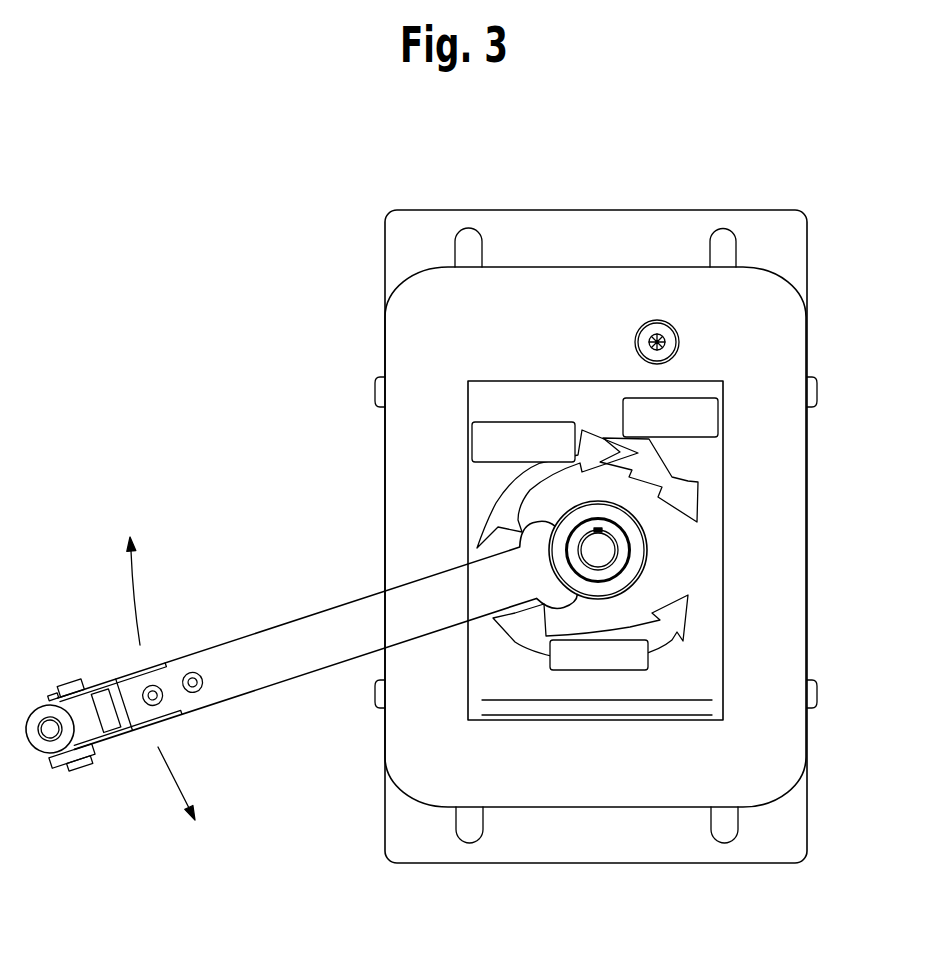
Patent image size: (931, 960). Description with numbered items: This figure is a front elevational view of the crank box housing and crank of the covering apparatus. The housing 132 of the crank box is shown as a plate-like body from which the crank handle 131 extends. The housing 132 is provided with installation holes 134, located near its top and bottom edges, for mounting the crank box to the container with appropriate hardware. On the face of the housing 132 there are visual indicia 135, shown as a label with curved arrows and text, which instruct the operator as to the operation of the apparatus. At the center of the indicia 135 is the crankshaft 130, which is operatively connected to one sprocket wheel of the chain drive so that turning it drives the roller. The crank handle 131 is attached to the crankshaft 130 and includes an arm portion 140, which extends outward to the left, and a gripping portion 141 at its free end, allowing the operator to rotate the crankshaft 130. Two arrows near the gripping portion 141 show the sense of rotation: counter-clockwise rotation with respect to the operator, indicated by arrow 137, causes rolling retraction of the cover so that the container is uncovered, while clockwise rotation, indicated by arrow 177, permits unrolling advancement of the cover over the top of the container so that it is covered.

The crankshaft 130 is at (602, 549).
The crank handle 131 is at (243, 694).
The housing 132 is at (418, 345).
The installation holes 134 is at (703, 247).
The visual indicia 135 is at (675, 573).
The arrow 137 is at (172, 790).
The arm portion 140 is at (312, 642).
The gripping portion 141 is at (43, 696).
The arrow 177 is at (132, 590).